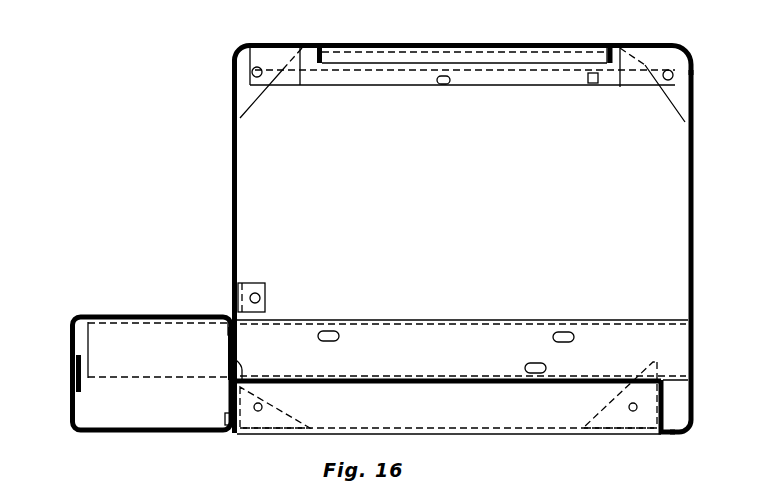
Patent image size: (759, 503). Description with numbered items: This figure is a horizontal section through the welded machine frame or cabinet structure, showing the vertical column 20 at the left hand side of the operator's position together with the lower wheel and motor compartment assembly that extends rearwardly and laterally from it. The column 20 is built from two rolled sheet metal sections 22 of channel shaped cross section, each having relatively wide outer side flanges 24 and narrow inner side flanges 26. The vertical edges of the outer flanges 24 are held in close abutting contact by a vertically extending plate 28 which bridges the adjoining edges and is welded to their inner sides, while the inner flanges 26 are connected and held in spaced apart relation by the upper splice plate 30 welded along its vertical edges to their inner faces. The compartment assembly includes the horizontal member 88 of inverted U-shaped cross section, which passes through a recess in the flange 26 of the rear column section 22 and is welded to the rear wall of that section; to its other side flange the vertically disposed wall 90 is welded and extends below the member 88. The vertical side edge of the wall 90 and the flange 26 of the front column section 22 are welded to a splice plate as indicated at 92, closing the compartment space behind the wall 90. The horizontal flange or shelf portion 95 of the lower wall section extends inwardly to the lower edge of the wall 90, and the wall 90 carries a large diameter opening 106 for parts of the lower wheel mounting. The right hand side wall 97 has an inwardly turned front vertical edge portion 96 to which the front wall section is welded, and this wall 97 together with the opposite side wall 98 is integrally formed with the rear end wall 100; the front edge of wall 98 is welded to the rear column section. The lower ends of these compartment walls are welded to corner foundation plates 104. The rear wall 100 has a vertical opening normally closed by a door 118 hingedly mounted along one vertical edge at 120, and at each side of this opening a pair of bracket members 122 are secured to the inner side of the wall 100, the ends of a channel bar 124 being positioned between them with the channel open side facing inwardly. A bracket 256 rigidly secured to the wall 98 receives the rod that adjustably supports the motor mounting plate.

The vertical column 20 is at (102, 432).
The rolled sheet metal sections 22 is at (148, 315).
The outer side flanges 24 is at (77, 339).
The inner side flanges 26 is at (248, 394).
The vertically extending plate 28 is at (79, 372).
The upper splice plate 30 is at (228, 358).
The horizontal member 88 is at (466, 336).
The vertical wall 90 is at (342, 378).
The weld 92 is at (239, 372).
The horizontal flange or shelf portion 95 is at (471, 405).
The inwardly turned front vertical edge portion 96 is at (664, 410).
The right hand side wall 97 is at (695, 231).
The side wall 98 is at (237, 228).
The rear end wall 100 is at (298, 43).
The corner foundation plates 104 is at (250, 94).
The opening 106 is at (453, 384).
The door 118 is at (437, 44).
The hinge 120 is at (320, 45).
The bracket members 122 is at (248, 58).
The channel bar 124 is at (540, 78).
The bracket 256 is at (258, 290).